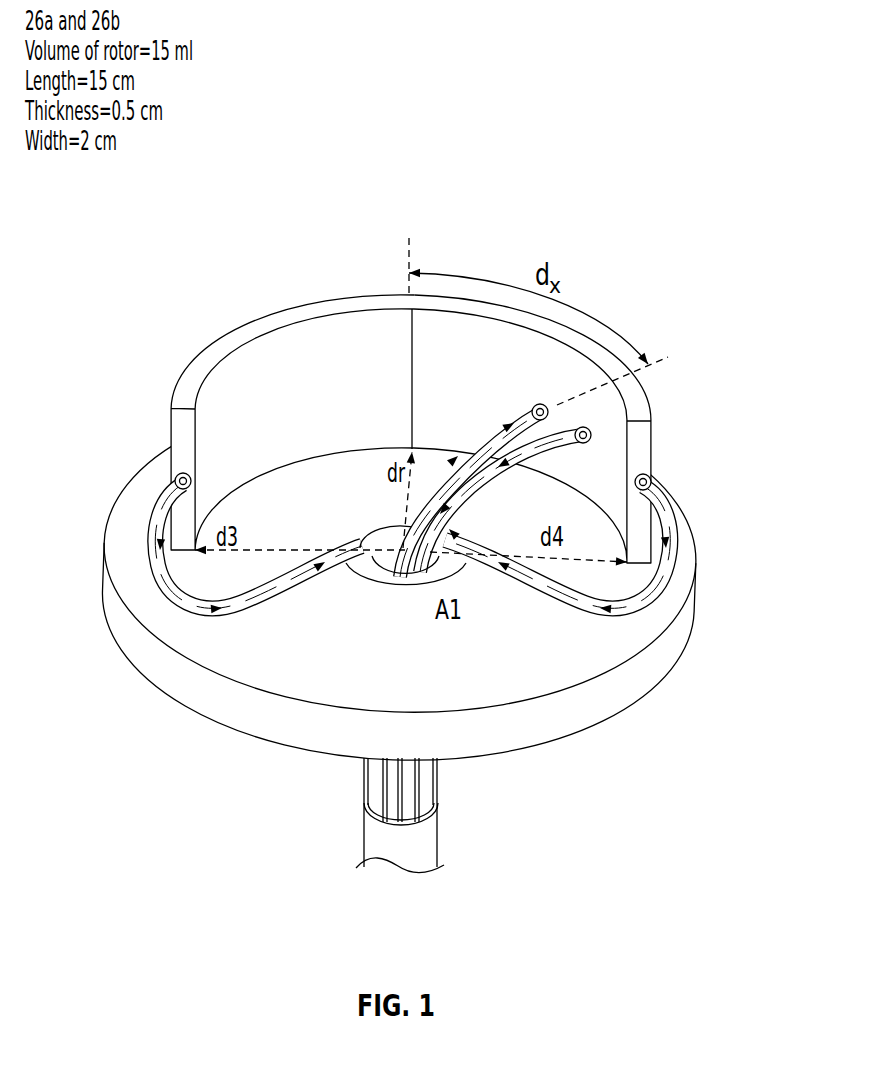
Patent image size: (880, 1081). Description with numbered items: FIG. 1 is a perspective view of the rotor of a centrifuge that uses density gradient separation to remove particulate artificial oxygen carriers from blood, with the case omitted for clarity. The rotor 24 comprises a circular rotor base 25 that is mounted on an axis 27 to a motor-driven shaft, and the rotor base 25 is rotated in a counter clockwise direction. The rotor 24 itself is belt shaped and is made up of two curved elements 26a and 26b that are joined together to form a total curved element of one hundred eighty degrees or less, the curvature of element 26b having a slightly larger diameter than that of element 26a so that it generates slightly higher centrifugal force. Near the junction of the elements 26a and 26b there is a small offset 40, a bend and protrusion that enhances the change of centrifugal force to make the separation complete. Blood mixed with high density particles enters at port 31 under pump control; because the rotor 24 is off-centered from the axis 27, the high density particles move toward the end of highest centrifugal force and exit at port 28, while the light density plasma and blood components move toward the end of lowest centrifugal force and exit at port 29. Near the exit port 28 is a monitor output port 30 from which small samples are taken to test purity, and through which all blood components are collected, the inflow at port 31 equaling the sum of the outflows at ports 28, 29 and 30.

The rotor 24 is at (411, 404).
The rotor base 25 is at (121, 518).
The curved element 26a is at (260, 328).
The curved element 26b is at (515, 328).
The axis 27 is at (381, 527).
The port 28 is at (652, 481).
The port 29 is at (173, 481).
The monitor output port 30 is at (546, 458).
The port 31 is at (532, 410).
The offset 40 is at (408, 323).